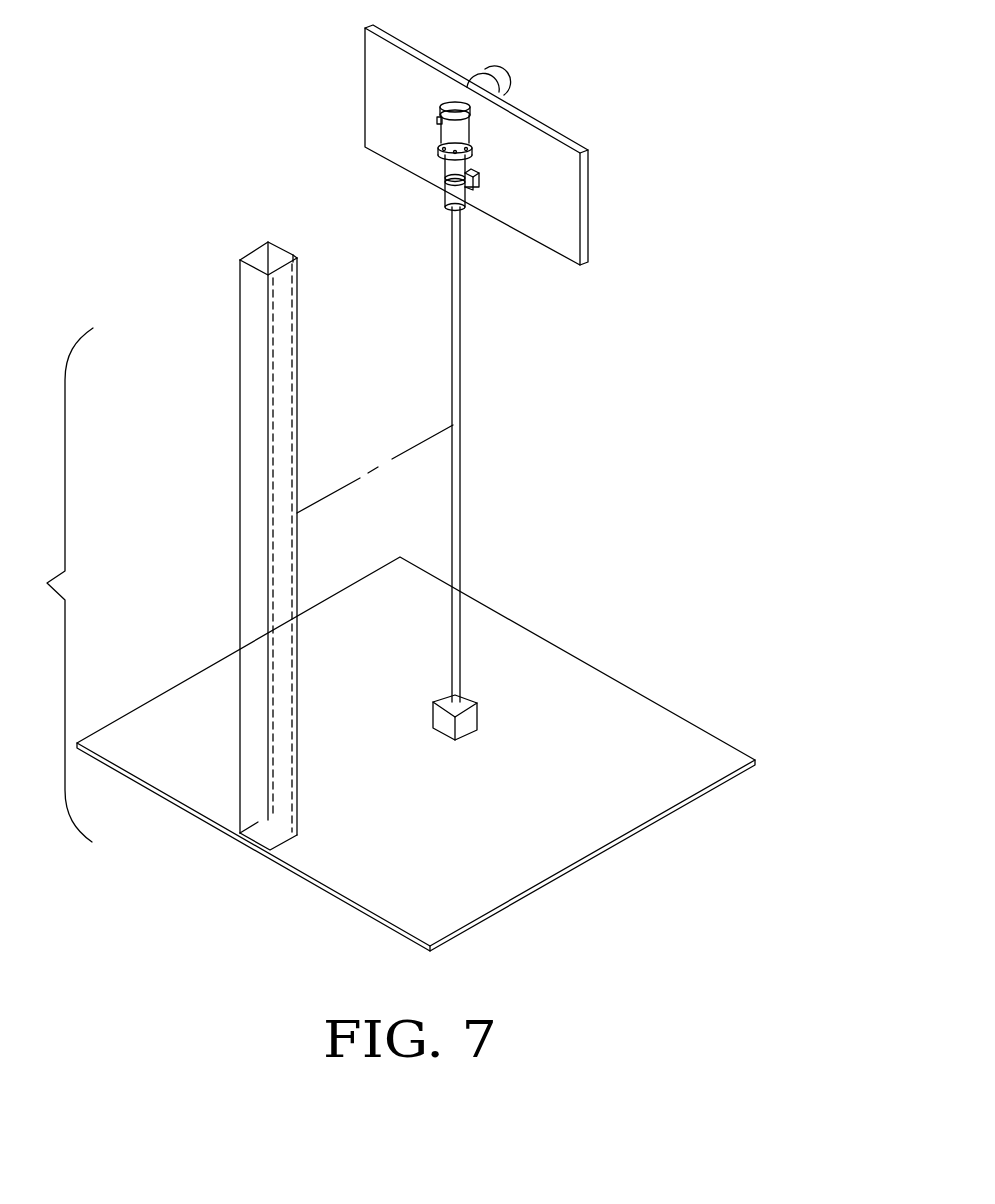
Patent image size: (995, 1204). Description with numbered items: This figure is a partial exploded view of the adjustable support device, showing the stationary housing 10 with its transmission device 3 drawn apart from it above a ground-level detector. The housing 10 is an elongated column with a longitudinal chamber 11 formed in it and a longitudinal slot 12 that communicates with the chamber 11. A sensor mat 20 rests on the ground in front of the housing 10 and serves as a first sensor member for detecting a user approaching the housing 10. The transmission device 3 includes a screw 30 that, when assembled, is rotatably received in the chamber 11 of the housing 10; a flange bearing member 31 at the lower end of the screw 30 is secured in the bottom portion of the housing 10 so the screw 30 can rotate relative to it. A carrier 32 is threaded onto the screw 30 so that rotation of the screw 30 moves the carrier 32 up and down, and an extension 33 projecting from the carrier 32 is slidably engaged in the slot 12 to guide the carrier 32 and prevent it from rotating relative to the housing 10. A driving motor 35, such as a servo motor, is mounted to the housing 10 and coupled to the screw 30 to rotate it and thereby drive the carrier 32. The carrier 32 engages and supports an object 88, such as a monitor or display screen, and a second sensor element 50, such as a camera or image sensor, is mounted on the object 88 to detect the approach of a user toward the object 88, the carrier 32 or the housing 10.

The transmission device 3 is at (468, 450).
The housing 10 is at (240, 414).
The chamber 11 is at (256, 257).
The slot 12 is at (280, 260).
The sensor mat 20 is at (640, 793).
The screw 30 is at (456, 490).
The flange bearing member 31 is at (470, 713).
The carrier 32 is at (450, 193).
The extension 33 is at (473, 187).
The driving motor 35 is at (447, 133).
The sensor element 50 is at (488, 62).
The object 88 is at (583, 193).